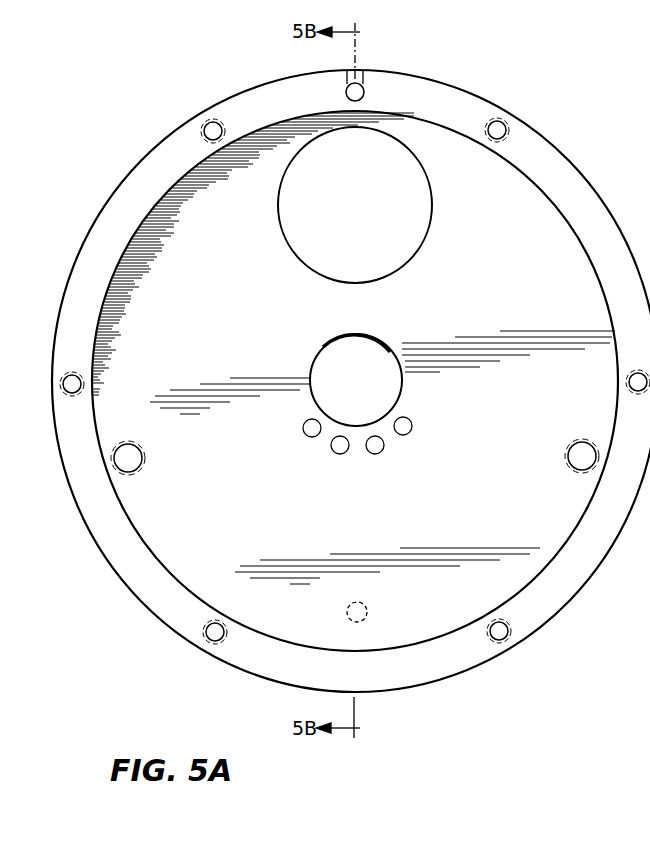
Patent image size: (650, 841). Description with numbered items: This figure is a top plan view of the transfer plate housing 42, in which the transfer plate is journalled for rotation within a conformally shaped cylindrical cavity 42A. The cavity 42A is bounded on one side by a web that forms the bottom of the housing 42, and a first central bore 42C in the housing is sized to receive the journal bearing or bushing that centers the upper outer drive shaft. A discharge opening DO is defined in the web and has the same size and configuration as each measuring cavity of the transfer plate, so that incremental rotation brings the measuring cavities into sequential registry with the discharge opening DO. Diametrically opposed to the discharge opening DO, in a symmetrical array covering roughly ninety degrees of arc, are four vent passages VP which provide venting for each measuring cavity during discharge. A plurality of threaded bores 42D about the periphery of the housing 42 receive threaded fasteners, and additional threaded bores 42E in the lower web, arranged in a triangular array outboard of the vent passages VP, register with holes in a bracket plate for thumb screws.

The housing 42 is at (568, 159).
The cylindrical cavity 42A is at (551, 298).
The first central bore 42C is at (376, 337).
The threaded bores 42D is at (71, 374).
The additional threaded bores 42E is at (140, 446).
The discharge opening DO is at (433, 206).
The vent passages VP is at (425, 466).